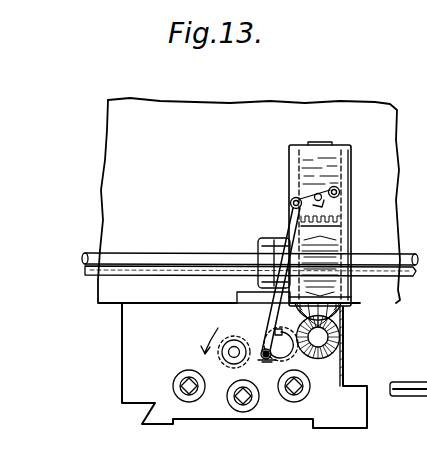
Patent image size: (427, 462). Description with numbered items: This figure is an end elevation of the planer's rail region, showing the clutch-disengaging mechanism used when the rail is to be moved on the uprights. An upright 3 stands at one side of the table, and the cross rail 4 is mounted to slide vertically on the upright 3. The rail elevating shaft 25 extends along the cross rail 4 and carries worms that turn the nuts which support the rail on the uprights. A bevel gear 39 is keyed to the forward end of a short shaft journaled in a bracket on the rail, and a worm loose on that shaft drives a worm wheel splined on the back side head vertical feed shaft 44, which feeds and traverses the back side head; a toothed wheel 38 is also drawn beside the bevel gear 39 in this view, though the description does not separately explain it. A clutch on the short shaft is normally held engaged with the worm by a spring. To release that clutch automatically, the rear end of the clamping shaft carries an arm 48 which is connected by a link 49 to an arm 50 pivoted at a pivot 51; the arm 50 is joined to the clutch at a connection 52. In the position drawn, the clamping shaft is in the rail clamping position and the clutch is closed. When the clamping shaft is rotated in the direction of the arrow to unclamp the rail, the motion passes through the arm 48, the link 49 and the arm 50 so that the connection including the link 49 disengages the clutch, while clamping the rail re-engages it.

The upright 3 is at (105, 168).
The cross rail 4 is at (124, 348).
The rail elevating shaft 25 is at (303, 368).
The ratchet wheel 38 is at (344, 337).
The bevel gear 39 is at (350, 310).
The back side head vertical feed shaft 44 is at (82, 258).
The arm 48 is at (222, 356).
The link 49 is at (262, 322).
The arm 50 is at (291, 203).
The pivot 51 is at (341, 193).
The connection 52 is at (316, 196).